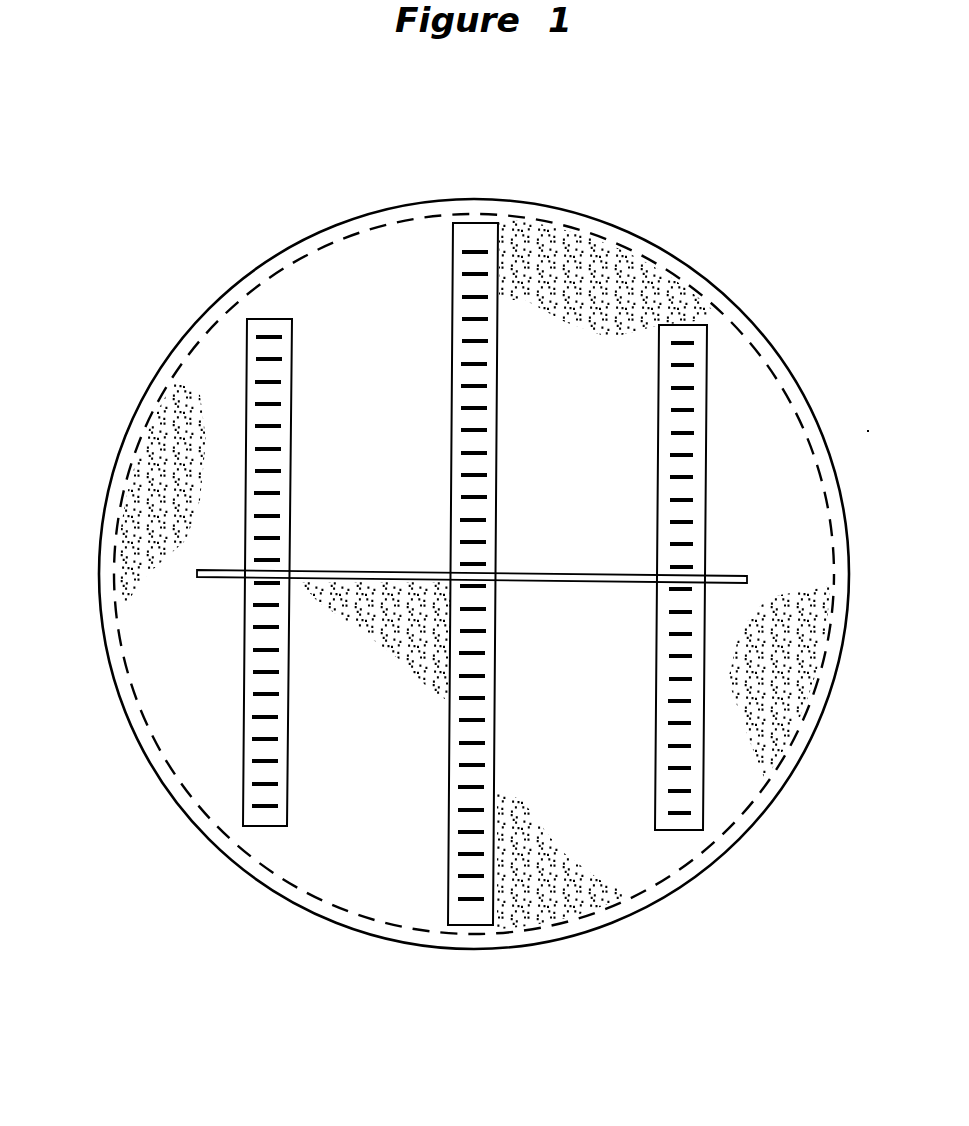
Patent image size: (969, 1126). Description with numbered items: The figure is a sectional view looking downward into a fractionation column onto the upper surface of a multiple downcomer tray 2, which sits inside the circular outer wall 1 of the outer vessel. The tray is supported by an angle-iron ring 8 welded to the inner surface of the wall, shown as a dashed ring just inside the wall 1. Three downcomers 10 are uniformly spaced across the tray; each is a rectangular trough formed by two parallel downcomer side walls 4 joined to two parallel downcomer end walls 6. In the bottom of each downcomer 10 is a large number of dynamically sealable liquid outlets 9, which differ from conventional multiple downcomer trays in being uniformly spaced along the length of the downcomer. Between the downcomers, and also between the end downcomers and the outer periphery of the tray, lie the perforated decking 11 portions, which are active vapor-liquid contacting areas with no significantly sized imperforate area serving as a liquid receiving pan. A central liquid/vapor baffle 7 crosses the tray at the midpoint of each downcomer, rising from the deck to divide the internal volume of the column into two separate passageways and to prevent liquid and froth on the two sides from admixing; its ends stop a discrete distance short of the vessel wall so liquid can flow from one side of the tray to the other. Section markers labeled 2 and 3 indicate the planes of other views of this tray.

The circular outer wall 1 is at (711, 267).
The multiple downcomer tray 2 is at (500, 159).
The section line 3- 3 is at (73, 553).
The downcomer side wall 4 is at (244, 740).
The downcomer end wall 6 is at (275, 318).
The central liquid/vapor baffle 7 is at (408, 570).
The angle-iron ring 8 is at (160, 372).
The liquid outlet 9 is at (268, 472).
The downcomer 10 is at (272, 832).
The perforated decking 11 is at (378, 477).